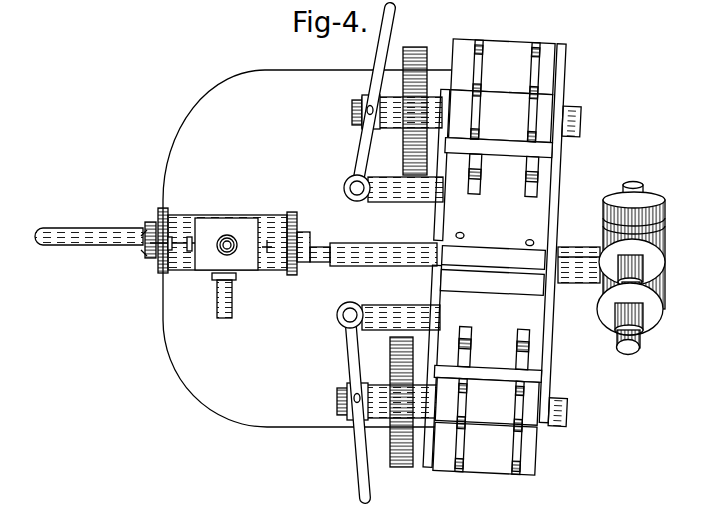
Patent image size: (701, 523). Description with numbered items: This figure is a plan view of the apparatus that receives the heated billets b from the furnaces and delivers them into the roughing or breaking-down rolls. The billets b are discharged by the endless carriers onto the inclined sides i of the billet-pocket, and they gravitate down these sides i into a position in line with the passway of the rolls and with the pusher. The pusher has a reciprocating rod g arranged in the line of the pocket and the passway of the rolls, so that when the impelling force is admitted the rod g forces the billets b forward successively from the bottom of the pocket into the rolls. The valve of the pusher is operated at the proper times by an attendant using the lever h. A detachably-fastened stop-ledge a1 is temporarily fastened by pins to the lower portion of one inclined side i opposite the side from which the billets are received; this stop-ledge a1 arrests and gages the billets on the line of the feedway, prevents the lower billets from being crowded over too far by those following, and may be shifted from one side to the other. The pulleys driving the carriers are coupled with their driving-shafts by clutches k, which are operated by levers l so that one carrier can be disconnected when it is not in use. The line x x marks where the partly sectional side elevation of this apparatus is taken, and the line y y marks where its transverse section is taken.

The lever h is at (144, 258).
The reciprocating rod g is at (293, 263).
The section line x x is at (560, 277).
The section line y y is at (308, 445).
The clutch k is at (397, 110).
The lever l is at (357, 152).
The gear j is at (414, 47).
The inclined side i is at (503, 257).
The billet b is at (495, 258).
The stop-ledge a1 is at (492, 284).